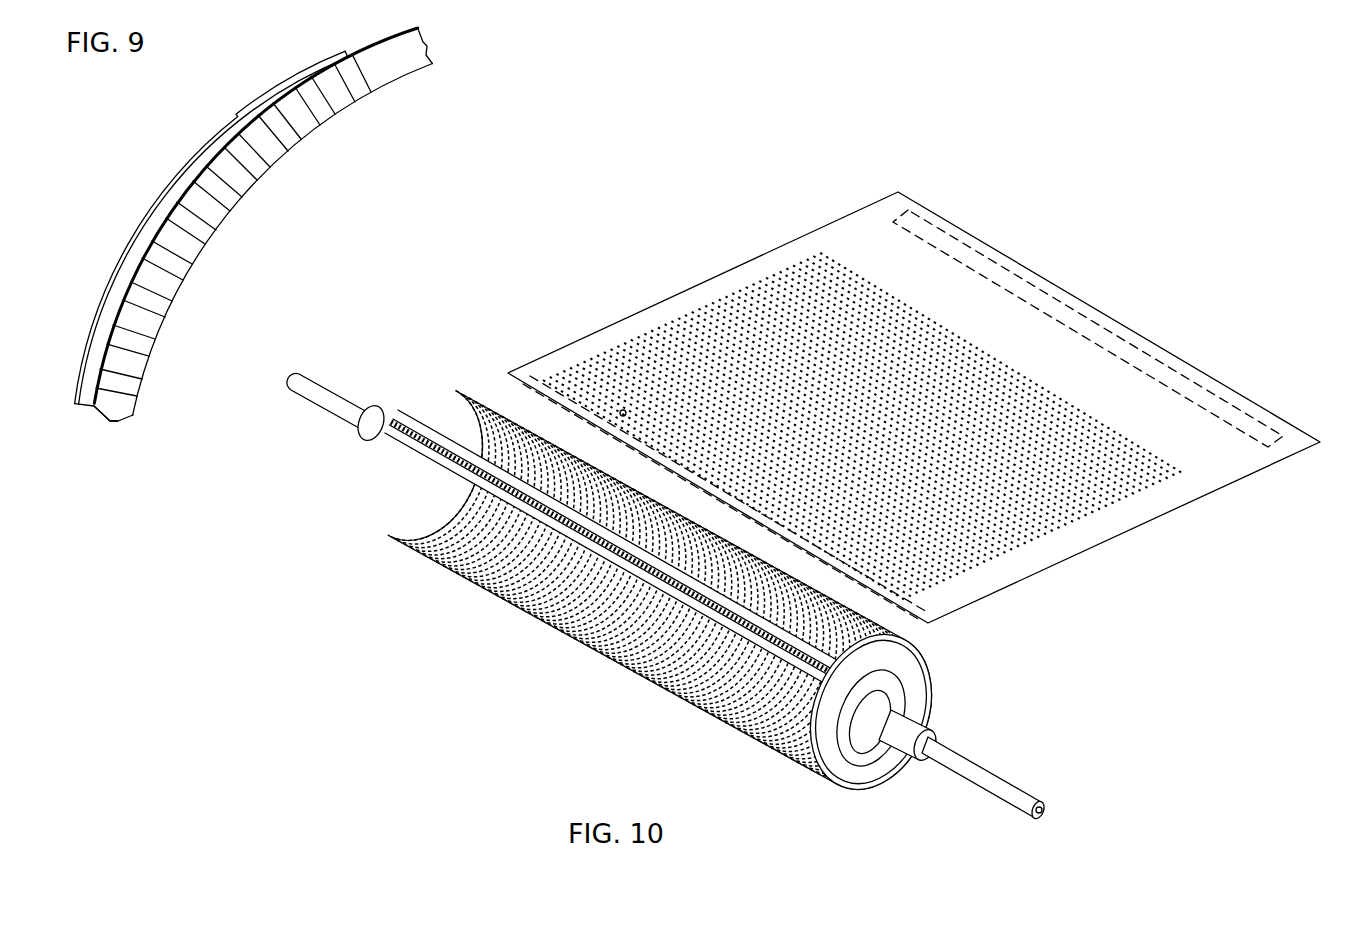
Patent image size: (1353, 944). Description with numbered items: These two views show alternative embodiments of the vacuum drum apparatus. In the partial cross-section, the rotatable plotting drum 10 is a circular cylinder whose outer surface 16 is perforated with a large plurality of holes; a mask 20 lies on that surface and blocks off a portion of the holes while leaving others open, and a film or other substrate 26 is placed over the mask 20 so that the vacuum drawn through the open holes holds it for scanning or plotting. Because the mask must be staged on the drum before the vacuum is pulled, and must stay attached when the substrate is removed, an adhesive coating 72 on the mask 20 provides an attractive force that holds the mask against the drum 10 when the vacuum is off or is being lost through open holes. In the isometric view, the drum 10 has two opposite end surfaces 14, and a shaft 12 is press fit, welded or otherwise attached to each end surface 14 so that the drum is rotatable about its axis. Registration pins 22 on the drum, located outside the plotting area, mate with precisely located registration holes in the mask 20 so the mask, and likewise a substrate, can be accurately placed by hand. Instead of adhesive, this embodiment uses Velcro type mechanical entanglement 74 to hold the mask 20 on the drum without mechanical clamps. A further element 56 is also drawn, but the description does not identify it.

In FIG. 9, the rotatable plotting drum 10 is at (365, 85).
In FIG. 10, the rotatable plotting drum 10 is at (370, 513).
In FIG. 10, the shaft 12 is at (387, 410).
In FIG. 10, the end surface 14 is at (848, 770).
In FIG. 10, the outer surface 16 is at (753, 737).
In FIG. 9, the mask 20 is at (268, 102).
In FIG. 10, the mask 20 is at (1073, 548).
In FIG. 10, the registration pin 22 is at (530, 460).
In FIG. 9, the film or other substrate 26 is at (230, 118).
In FIG. 10, the adhesive 56 is at (621, 411).
In FIG. 9, the adhesive coating 72 is at (94, 407).
In FIG. 10, the Velcro type mechanical entanglement 74 is at (530, 382).